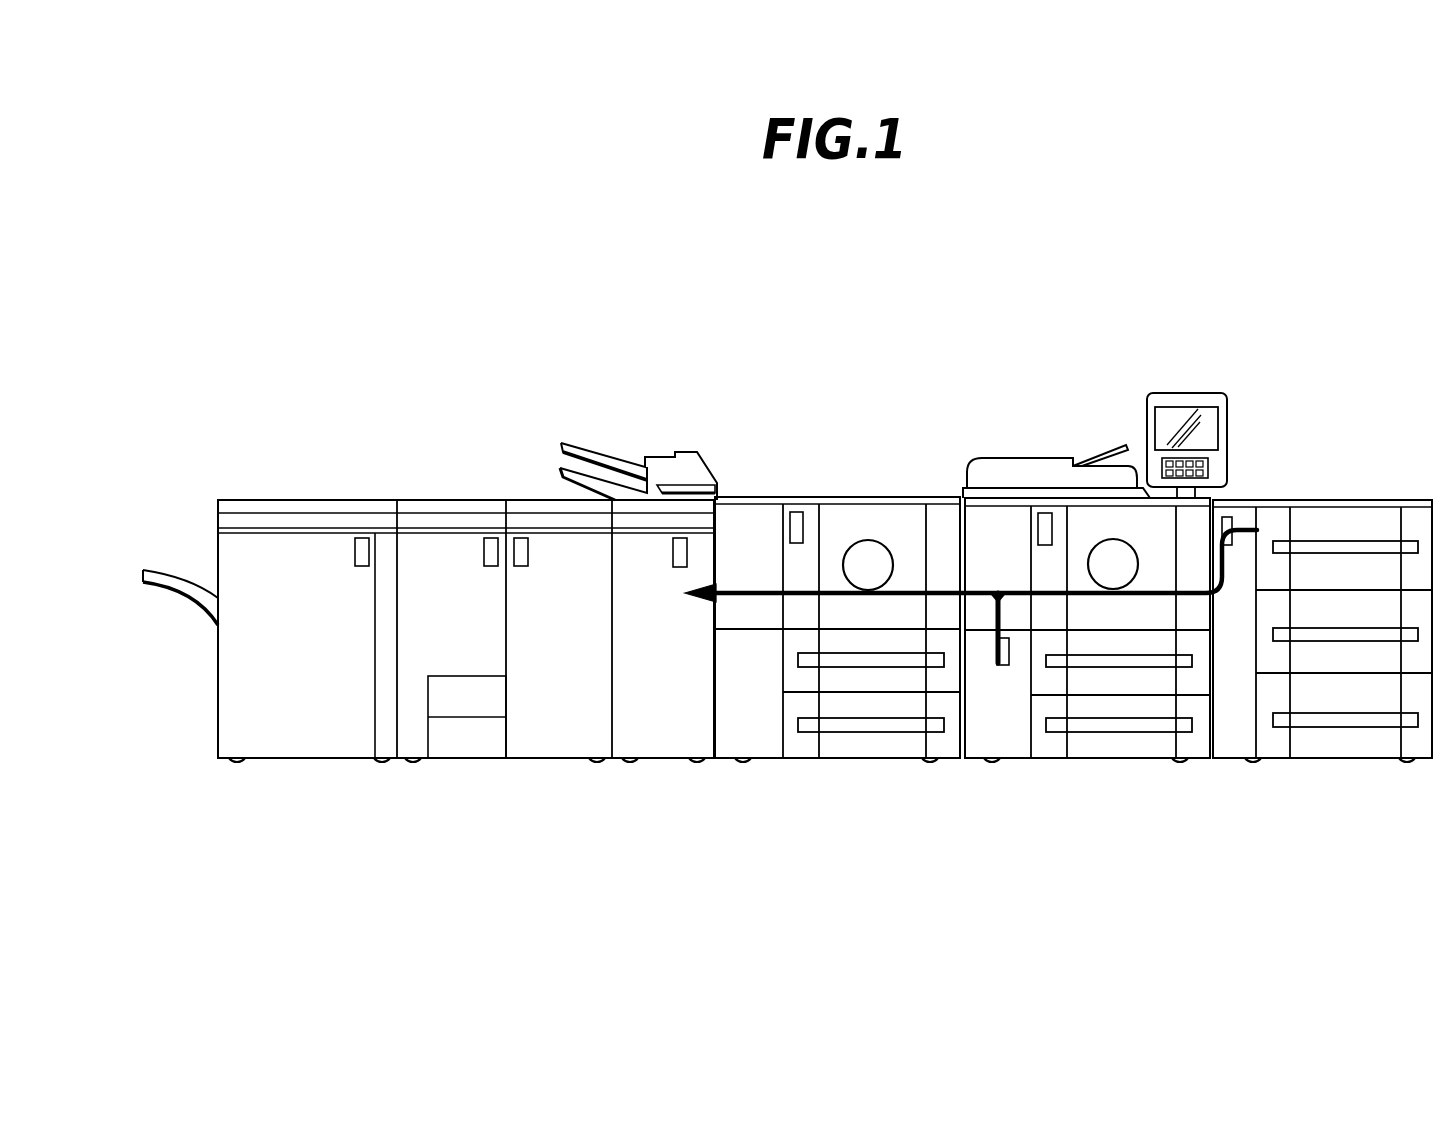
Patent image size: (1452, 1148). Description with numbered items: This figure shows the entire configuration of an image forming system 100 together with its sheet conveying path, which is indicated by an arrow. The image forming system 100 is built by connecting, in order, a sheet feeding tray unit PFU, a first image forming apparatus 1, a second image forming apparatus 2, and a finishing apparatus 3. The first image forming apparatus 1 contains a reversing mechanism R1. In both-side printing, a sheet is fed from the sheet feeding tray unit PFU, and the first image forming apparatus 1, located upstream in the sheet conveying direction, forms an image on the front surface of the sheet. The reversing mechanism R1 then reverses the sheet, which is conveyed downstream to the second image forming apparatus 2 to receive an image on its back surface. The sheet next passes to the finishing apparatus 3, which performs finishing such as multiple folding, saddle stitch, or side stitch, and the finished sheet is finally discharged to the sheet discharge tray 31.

The image forming system 100 is at (809, 358).
The first image forming apparatus 1 is at (1112, 753).
The second image forming apparatus 2 is at (853, 757).
The finishing apparatus 3 is at (543, 757).
The sheet discharge tray 31 is at (175, 593).
The reversing mechanism R1 is at (996, 668).
The sheet feeding tray unit PFU is at (1328, 763).